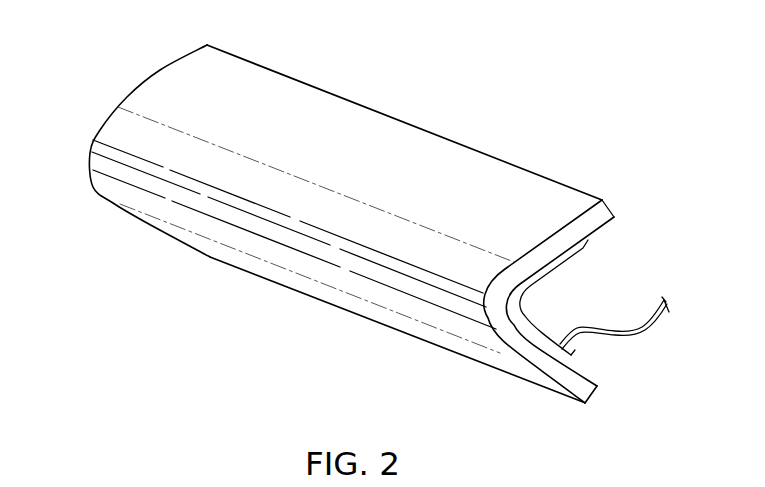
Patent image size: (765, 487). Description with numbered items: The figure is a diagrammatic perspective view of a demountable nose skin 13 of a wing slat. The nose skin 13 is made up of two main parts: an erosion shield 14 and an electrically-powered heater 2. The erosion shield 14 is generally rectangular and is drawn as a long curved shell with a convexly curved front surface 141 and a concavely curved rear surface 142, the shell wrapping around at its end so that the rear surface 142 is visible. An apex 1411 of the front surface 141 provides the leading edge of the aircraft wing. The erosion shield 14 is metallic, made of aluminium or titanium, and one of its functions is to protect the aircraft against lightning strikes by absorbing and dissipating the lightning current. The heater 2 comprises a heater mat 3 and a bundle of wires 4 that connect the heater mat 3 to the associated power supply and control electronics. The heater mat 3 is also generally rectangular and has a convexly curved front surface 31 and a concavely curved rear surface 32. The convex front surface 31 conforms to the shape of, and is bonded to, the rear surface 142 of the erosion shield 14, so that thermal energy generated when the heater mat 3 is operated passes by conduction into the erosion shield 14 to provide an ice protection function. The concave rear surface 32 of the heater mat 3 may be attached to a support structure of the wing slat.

The nose skin 13 is at (325, 214).
The erosion shield 14 is at (392, 155).
The front surface 141 is at (340, 98).
The rear surface 142 is at (614, 220).
The apex 1411 is at (293, 233).
The heater mat 3 is at (558, 313).
The front surface 31 is at (542, 363).
The rear surface 32 is at (574, 352).
The heater 2 is at (552, 310).
The bundle of wires 4 is at (642, 332).